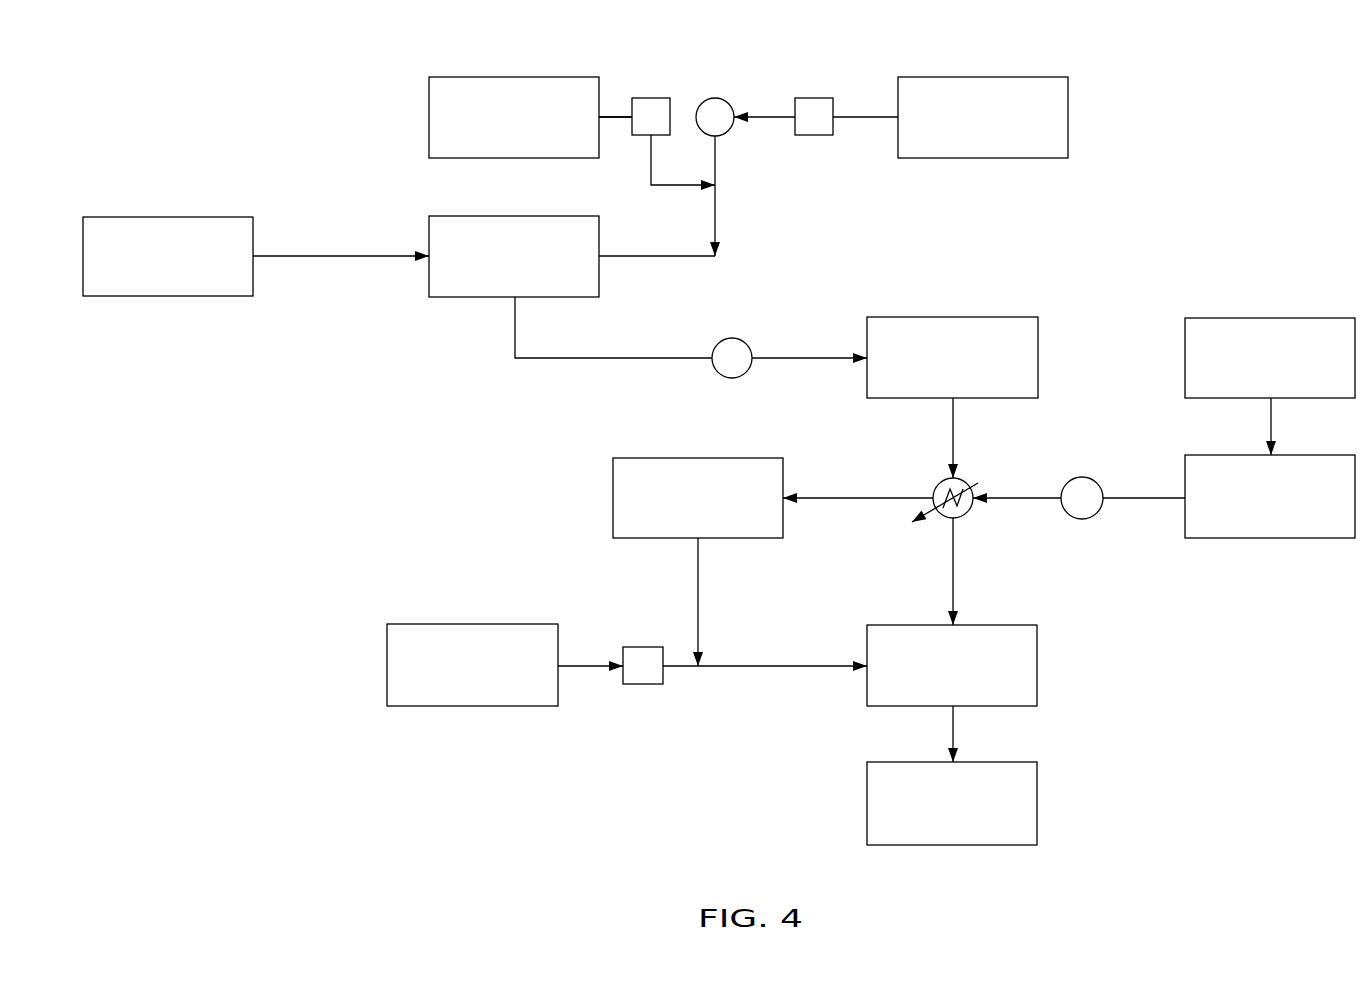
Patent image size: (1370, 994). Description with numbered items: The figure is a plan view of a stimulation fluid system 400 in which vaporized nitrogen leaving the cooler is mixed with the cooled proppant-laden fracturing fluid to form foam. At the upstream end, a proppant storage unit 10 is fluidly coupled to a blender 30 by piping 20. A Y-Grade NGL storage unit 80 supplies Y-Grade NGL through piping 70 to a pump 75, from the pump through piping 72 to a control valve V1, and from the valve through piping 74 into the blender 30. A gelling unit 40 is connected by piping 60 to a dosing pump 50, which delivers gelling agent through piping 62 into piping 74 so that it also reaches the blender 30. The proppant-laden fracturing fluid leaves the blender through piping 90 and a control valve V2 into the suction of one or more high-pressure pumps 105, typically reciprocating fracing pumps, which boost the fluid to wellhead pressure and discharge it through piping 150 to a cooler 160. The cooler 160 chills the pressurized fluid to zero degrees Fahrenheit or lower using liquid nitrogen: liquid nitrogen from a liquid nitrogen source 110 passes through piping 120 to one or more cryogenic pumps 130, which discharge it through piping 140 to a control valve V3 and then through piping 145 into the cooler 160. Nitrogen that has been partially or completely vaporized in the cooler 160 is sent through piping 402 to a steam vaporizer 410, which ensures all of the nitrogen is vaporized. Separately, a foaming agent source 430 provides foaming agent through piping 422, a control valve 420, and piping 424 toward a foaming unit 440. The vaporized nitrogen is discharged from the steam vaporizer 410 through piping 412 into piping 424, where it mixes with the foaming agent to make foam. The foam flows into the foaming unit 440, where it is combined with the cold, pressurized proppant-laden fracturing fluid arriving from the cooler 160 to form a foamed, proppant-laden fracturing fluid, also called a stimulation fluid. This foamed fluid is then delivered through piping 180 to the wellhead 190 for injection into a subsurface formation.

The stimulation fluid system 400 is at (365, 495).
The proppant storage unit 10 is at (188, 217).
The piping 20 is at (325, 260).
The blender 30 is at (535, 216).
The gelling unit 40 is at (545, 77).
The dosing pump 50 is at (652, 98).
The piping 60 is at (617, 122).
The piping 62 is at (668, 188).
The control valve V1 is at (715, 98).
The piping 74 is at (715, 218).
The piping 72 is at (772, 122).
The pump 75 is at (814, 98).
The piping 70 is at (868, 122).
The Y-Grade NGL storage unit 80 is at (990, 77).
The piping 90 is at (515, 336).
The control valve V2 is at (735, 338).
The high-pressure pumps 105 is at (957, 317).
The liquid nitrogen source 110 is at (1275, 318).
The piping 120 is at (1271, 420).
The cryogenic pumps 130 is at (1275, 538).
The piping 140 is at (1133, 498).
The control valve V3 is at (1075, 519).
The piping 145 is at (1010, 498).
The cooler 160 is at (968, 512).
The piping 402 is at (855, 498).
The steam vaporizer 410 is at (700, 458).
The piping 412 is at (698, 590).
The piping 150 is at (953, 560).
The foaming agent source 430 is at (480, 624).
The piping 422 is at (590, 670).
The control valve 420 is at (645, 647).
The piping 424 is at (795, 670).
The foaming unit 440 is at (995, 625).
The piping 180 is at (953, 732).
The wellhead 190 is at (957, 845).